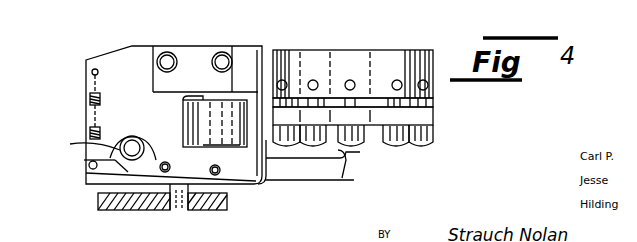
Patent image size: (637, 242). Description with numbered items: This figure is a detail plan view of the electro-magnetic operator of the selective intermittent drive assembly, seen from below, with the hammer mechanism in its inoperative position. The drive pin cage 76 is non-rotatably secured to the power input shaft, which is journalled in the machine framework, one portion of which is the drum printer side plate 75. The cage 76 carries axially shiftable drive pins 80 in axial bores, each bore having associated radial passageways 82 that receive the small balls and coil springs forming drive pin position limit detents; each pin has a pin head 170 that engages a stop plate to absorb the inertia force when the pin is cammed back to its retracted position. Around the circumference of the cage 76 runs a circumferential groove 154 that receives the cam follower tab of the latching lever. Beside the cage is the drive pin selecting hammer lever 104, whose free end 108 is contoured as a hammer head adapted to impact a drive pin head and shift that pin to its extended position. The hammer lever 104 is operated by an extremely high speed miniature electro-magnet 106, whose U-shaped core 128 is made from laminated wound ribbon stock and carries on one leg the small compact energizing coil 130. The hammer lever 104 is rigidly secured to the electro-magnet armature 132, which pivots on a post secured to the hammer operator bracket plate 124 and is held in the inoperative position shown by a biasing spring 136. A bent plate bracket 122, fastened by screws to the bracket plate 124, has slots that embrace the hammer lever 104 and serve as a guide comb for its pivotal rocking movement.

The drum printer side plate 75 is at (142, 208).
The drive pin cage 76 is at (412, 60).
The drive pins 80 is at (348, 150).
The radial passageways 82 is at (356, 82).
The drive pin selecting hammer lever 104 is at (300, 160).
The electro-magnet 106 is at (152, 96).
The free end of hammer lever 108 is at (346, 166).
The bent plate bracket 122 is at (260, 190).
The hammer operator bracket plate 124 is at (90, 102).
The U-shaped core 128 is at (160, 113).
The energizing coil 130 is at (207, 62).
The electro-magnet armature 132 is at (186, 196).
The biasing spring 136 is at (90, 130).
The circumferential groove 154 is at (433, 100).
The pin head 170 is at (398, 150).